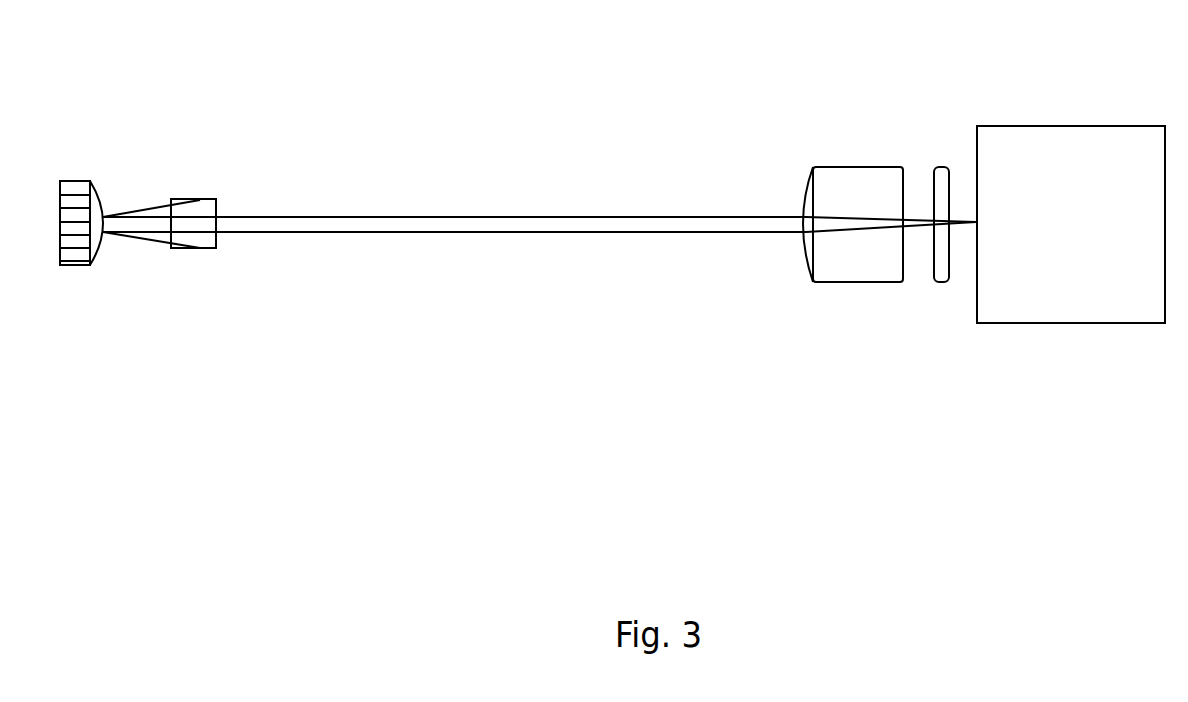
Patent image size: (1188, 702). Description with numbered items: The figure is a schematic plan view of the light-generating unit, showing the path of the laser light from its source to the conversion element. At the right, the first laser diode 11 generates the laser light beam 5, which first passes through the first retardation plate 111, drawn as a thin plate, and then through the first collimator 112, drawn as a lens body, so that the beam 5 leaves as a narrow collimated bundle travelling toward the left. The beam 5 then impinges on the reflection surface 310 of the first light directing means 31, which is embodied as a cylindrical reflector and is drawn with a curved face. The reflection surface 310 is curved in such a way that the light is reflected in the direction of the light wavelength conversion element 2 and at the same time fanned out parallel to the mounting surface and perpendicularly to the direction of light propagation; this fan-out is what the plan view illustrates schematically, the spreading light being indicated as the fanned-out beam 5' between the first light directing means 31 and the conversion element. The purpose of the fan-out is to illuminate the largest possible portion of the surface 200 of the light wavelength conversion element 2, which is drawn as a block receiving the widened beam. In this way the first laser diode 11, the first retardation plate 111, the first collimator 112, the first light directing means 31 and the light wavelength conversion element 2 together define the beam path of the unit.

The first light directing means 31 is at (74, 265).
The reflection surface 310 is at (98, 195).
The diverging light beam 5' is at (151, 170).
The light wavelength conversion element 2 is at (201, 238).
The surface of the light wavelength conversion element 200 is at (193, 223).
The laser light beam 5 is at (539, 176).
The first collimator 112 is at (855, 183).
The first retardation plate 111 is at (942, 173).
The first laser diode 11 is at (1072, 145).